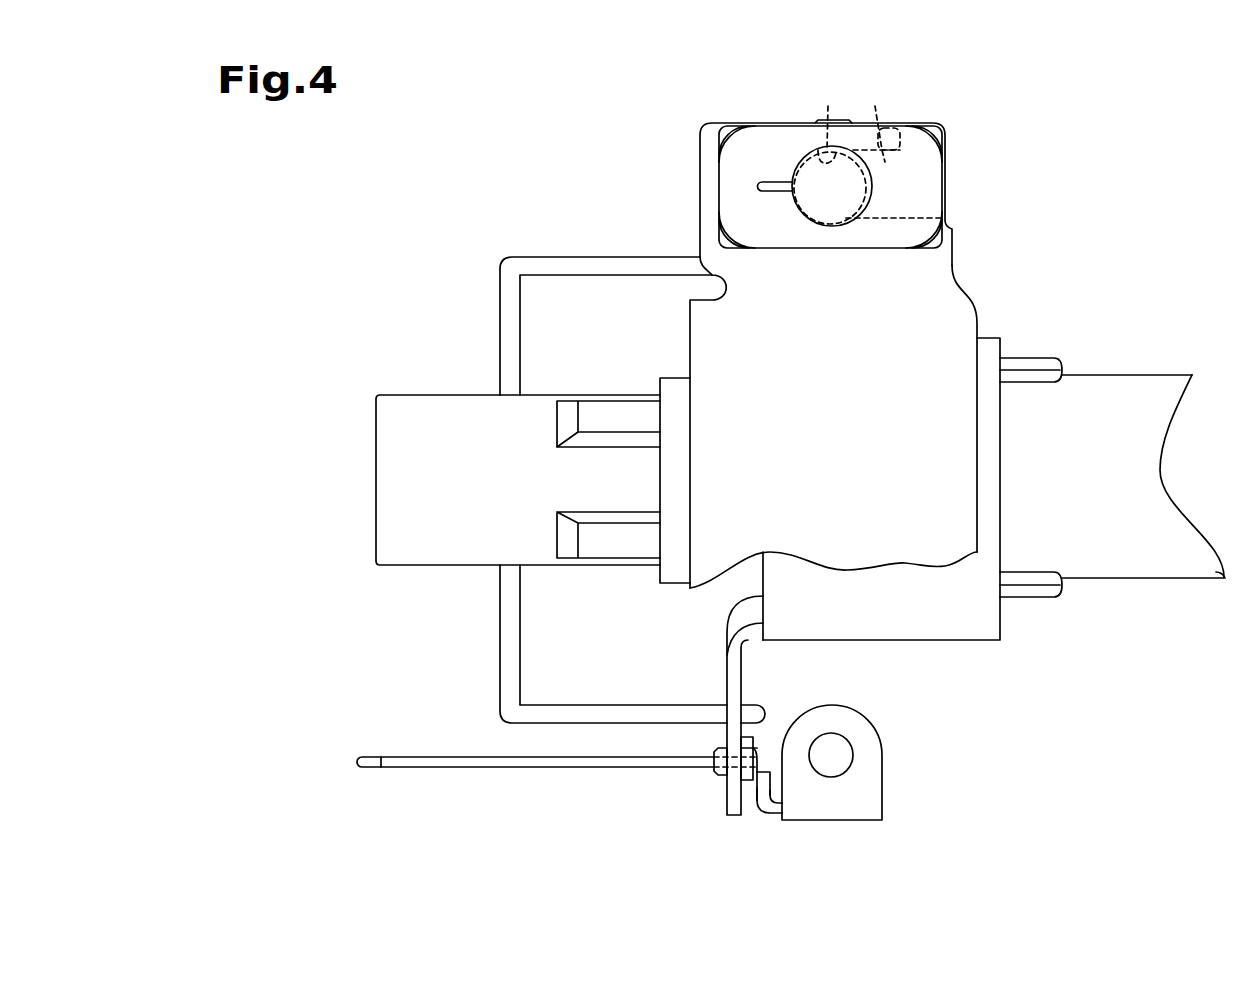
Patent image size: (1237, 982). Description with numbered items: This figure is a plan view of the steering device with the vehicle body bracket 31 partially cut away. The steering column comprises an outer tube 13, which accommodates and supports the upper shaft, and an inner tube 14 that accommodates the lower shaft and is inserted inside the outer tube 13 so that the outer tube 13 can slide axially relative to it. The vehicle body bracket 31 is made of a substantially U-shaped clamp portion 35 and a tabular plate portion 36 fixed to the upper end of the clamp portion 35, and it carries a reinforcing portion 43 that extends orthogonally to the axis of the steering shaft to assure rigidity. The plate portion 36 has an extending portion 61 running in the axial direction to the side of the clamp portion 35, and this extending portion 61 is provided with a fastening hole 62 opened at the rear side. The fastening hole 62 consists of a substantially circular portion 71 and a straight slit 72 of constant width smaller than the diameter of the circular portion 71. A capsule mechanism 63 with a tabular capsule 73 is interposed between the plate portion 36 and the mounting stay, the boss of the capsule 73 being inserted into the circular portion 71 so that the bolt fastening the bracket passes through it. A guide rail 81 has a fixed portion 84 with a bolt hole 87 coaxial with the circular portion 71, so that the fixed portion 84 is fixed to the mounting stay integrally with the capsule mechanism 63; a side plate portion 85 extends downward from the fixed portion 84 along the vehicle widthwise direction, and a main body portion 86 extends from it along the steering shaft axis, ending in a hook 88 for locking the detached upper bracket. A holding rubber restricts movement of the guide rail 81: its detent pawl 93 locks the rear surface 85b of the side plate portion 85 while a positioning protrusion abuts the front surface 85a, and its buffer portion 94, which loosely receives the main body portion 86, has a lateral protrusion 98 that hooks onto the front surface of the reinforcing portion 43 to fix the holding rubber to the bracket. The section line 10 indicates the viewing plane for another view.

The cross-section line 10 is at (312, 758).
The outer tube 13 is at (1122, 378).
The inner tube 14 is at (434, 405).
The vehicle body bracket 31 is at (886, 448).
The clamp portion 35 is at (1045, 291).
The plate portion 36 is at (963, 298).
The reinforcing portion 43 is at (727, 672).
The extending portion 61 is at (702, 150).
The fastening hole 62 is at (856, 108).
The capsule mechanism 63 is at (953, 107).
The circular portion 71 is at (828, 122).
The slit 72 is at (876, 121).
The capsule 73 is at (943, 172).
The guide rail 81 is at (805, 753).
The fixed portion 84 is at (872, 758).
The side plate portion 85 is at (771, 775).
The front surface 85a is at (748, 792).
The rear surface 85b is at (771, 797).
The main body portion 86 is at (484, 757).
The bolt hole 87 is at (846, 770).
The hook 88 is at (371, 757).
The detent pawl 93 is at (773, 768).
The buffer portion 94 is at (752, 736).
The protrusion 98 is at (716, 772).